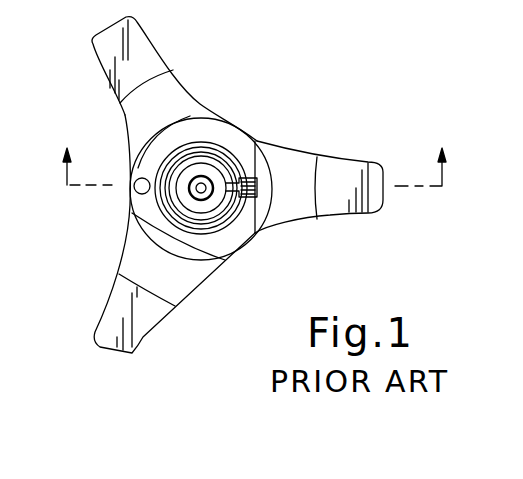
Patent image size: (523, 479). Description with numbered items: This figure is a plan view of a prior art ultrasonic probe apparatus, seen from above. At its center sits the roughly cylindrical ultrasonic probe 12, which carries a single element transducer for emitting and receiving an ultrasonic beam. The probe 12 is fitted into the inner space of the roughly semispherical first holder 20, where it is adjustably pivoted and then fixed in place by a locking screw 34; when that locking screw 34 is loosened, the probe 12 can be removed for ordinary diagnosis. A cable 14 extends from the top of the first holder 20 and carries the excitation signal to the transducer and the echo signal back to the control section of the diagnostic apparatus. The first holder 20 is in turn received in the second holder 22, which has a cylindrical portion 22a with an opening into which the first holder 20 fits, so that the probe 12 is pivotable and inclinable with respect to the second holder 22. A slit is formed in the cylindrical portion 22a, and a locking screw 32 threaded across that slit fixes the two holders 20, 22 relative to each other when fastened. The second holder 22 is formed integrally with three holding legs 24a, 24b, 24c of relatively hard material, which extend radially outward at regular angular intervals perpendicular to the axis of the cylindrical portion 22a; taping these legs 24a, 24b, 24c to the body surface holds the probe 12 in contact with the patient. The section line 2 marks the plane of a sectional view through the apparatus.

The section line 2- 2 is at (257, 150).
The ultrasonic probe 12 is at (203, 194).
The cable 14 is at (232, 138).
The first holder 20 is at (211, 155).
The second holder 22 is at (224, 260).
The cylindrical portion 22a is at (147, 163).
The holding leg 24a is at (349, 203).
The holding leg 24b is at (131, 53).
The holding leg 24c is at (146, 317).
The locking screw 32 is at (133, 190).
The locking screw 34 is at (263, 190).